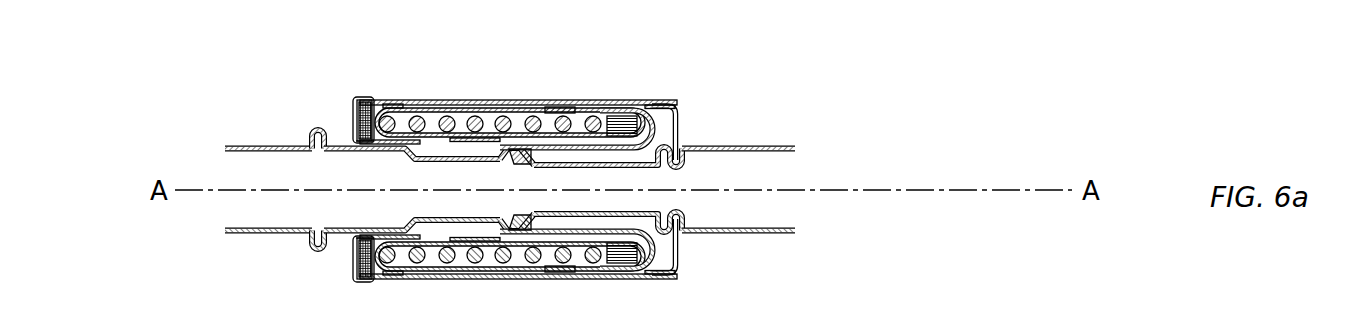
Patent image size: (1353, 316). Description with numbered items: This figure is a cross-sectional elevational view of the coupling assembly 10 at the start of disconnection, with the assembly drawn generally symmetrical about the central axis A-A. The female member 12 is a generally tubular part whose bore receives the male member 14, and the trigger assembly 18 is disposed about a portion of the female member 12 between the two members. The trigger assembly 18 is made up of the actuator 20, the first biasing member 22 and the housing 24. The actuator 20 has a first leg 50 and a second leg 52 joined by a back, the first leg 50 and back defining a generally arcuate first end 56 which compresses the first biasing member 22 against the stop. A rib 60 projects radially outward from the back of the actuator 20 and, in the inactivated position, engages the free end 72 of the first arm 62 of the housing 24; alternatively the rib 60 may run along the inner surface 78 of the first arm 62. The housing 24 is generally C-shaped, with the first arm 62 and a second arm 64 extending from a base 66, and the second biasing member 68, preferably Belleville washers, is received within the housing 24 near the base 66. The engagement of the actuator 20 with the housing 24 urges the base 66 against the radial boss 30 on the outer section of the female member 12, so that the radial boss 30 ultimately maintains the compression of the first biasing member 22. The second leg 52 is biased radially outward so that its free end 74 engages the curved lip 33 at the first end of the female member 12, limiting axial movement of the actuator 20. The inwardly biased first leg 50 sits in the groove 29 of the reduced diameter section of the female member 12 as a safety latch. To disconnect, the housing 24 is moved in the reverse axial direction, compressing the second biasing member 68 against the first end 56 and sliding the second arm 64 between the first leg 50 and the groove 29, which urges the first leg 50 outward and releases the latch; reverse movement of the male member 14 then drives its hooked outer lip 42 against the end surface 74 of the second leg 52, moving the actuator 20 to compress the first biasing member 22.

The coupling assembly 10 is at (629, 75).
The female member 12 is at (247, 145).
The male member 14 is at (780, 145).
The trigger assembly 18 is at (653, 88).
The actuator 20 is at (503, 115).
The first biasing member 22 is at (530, 116).
The housing 24 is at (354, 98).
The groove 29 is at (468, 152).
The radial boss 30 is at (313, 136).
The lip 33 is at (635, 140).
The outer lip 42 is at (522, 165).
The first leg 50 is at (437, 141).
The second leg 52 is at (583, 157).
The first end 56 is at (368, 136).
The rib 60 is at (548, 107).
The first arm 62 is at (487, 100).
The second arm 64 is at (402, 142).
The base 66 is at (353, 120).
The second biasing member 68 is at (367, 138).
The free end 72 is at (678, 98).
The free end 74 is at (536, 160).
The inner surface 78 is at (443, 108).